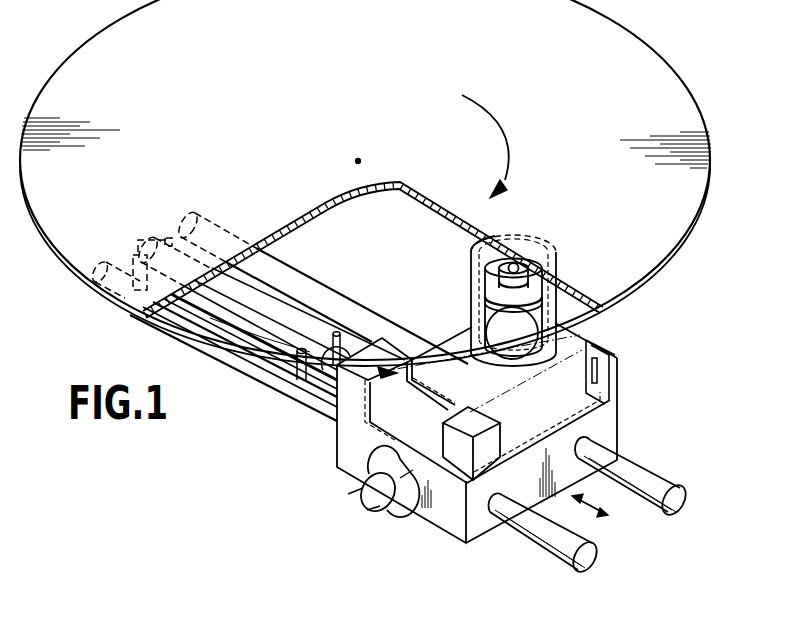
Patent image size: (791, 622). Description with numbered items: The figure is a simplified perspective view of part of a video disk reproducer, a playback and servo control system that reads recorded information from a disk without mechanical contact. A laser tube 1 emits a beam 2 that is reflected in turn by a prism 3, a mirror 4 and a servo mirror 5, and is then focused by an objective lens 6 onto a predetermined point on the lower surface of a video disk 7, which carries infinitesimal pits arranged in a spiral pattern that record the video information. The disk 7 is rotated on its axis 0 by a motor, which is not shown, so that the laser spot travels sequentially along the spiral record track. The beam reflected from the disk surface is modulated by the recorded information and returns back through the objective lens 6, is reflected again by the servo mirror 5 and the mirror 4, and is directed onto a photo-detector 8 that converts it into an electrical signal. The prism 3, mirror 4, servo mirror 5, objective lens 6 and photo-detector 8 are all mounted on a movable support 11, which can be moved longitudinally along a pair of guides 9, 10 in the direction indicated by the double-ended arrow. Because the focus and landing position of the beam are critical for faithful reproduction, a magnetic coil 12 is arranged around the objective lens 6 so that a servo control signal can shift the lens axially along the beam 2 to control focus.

The axis 0 is at (360, 160).
The laser tube 1 is at (277, 318).
The beam 2 is at (530, 328).
The prism 3 is at (447, 440).
The mirror 4 is at (606, 377).
The servo mirror 5 is at (505, 331).
The objective lens 6 is at (515, 267).
The video disk 7 is at (637, 253).
The photo-detector 8 is at (400, 508).
The guide 9 is at (556, 531).
The guide 10 is at (644, 476).
The movable support 11 is at (528, 470).
The magnetic coil 12 is at (498, 304).